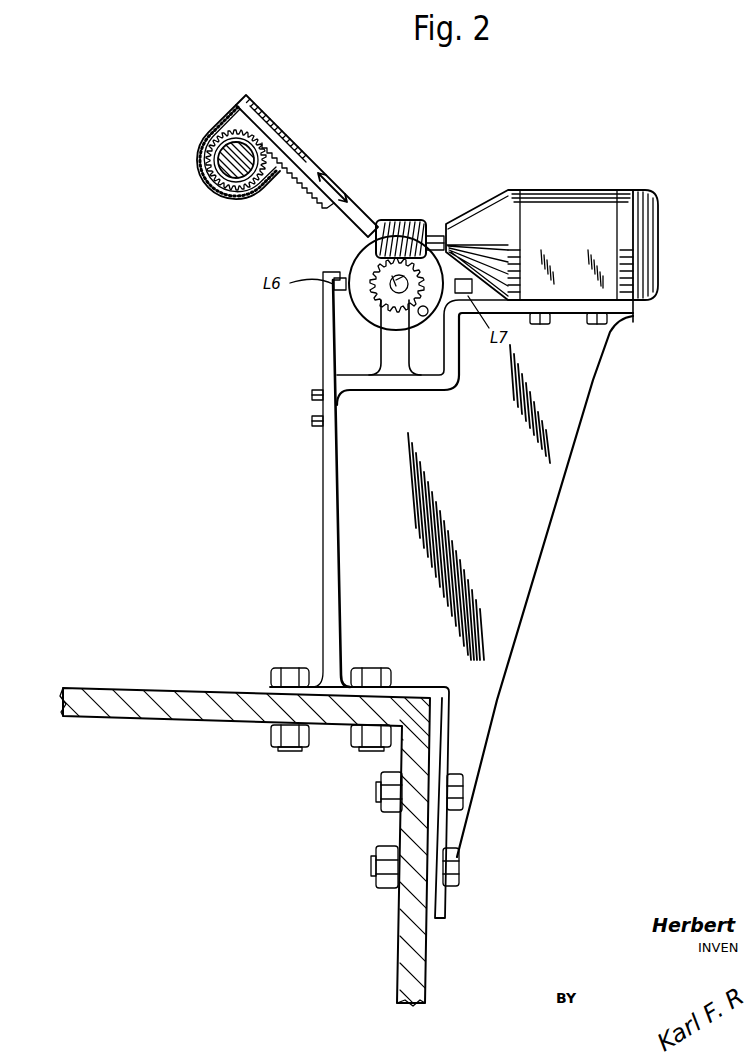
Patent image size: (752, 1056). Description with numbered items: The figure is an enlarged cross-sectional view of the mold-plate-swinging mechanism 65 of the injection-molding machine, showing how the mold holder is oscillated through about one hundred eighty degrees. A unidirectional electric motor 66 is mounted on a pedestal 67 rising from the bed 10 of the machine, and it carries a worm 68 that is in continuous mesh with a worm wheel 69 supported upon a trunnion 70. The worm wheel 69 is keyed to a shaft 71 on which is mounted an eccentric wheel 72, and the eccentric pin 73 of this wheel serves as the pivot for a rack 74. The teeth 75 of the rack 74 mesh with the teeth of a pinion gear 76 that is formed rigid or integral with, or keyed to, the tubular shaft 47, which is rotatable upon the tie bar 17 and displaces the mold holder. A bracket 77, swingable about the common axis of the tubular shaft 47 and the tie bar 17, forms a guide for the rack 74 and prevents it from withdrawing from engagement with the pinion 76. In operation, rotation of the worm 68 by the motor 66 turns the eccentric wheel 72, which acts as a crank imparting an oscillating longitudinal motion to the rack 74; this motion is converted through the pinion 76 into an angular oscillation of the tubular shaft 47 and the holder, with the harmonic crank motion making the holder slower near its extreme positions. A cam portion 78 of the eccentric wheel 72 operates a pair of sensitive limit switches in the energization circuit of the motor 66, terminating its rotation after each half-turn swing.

The bed 10 is at (166, 694).
The tie bar 17 is at (224, 198).
The tubular shaft 47 is at (197, 168).
The swinging mechanism 65 is at (648, 183).
The unidirectional electric motor 66 is at (661, 272).
The pedestal 67 is at (628, 322).
The worm 68 is at (405, 220).
The worm wheel 69 is at (388, 322).
The trunnion 70 is at (396, 356).
The shaft 71 is at (366, 303).
The eccentric wheel 72 is at (368, 318).
The eccentric pin 73 is at (428, 316).
The rack 74 is at (352, 218).
The rack teeth 75 is at (303, 194).
The pinion gear 76 is at (222, 120).
The bracket 77 is at (263, 115).
The cam portion 78 is at (350, 268).